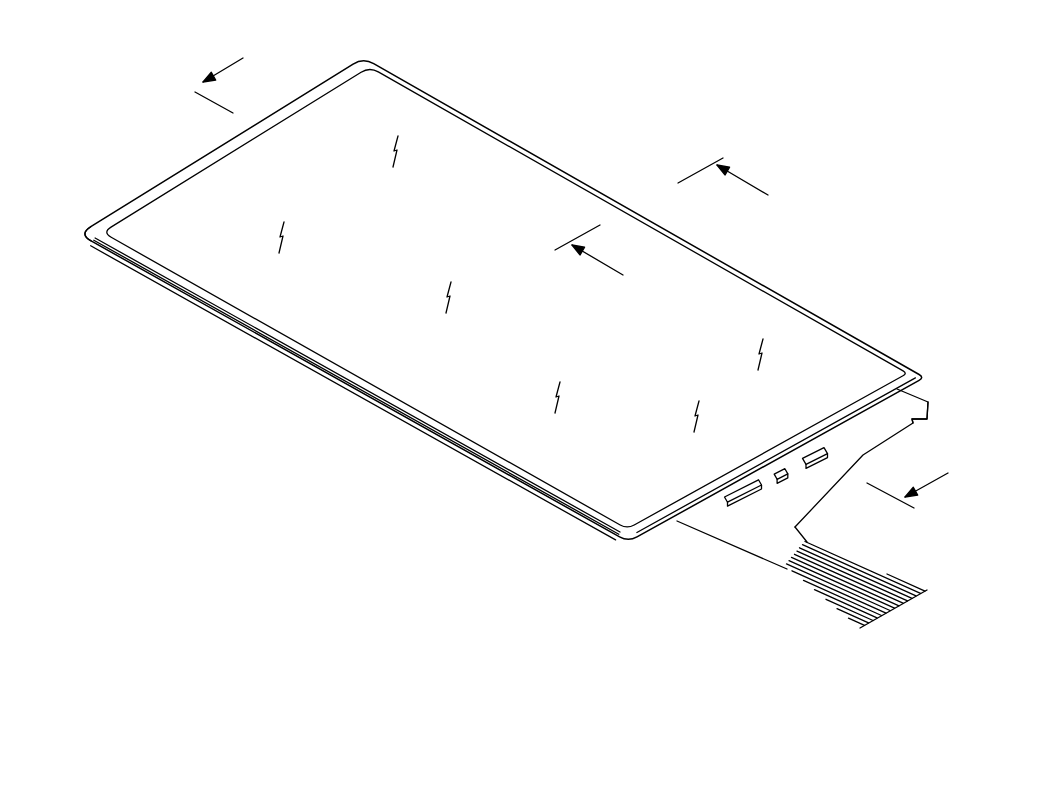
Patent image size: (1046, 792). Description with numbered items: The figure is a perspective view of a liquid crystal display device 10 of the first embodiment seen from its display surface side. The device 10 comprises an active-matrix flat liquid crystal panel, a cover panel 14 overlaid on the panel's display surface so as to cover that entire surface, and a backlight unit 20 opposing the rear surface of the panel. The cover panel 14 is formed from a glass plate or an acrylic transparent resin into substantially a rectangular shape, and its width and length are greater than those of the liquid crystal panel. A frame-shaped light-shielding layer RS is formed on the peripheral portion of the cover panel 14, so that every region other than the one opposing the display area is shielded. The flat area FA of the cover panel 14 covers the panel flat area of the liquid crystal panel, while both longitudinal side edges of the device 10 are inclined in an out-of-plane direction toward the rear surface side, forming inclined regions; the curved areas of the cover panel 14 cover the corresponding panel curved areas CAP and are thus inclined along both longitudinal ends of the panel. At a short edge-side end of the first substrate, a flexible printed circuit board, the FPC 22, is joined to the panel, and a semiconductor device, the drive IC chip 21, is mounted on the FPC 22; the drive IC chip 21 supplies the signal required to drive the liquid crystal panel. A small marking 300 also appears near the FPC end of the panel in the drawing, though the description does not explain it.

The liquid crystal display device 10 is at (500, 93).
The cover panel 14 is at (488, 177).
The backlight unit 20 is at (520, 490).
The drive IC chip 21 is at (747, 503).
The FPC 22 is at (762, 537).
The terminal portion 300 is at (906, 410).
The panel curved area CAP is at (278, 310).
The light-shielding layer RS is at (118, 212).
The flat area FA is at (487, 348).